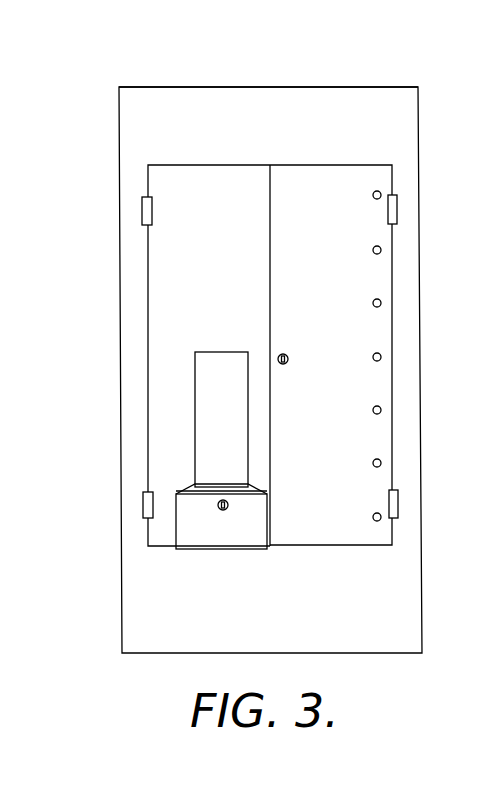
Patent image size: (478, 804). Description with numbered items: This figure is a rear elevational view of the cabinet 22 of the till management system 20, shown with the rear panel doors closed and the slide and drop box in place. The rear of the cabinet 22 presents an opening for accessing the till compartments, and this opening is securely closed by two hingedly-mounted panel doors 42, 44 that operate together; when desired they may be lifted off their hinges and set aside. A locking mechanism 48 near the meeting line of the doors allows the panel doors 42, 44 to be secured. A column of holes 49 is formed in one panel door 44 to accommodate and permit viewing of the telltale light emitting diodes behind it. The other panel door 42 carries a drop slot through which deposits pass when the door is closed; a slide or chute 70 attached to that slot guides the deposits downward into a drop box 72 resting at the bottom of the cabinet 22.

The system 20 is at (99, 93).
The cabinet 22 is at (280, 80).
The panel door 42 is at (246, 221).
The panel door 44 is at (363, 221).
The locking mechanism 48 is at (290, 357).
The holes 49 is at (381, 193).
The slide 70 is at (233, 412).
The drop box 72 is at (257, 529).